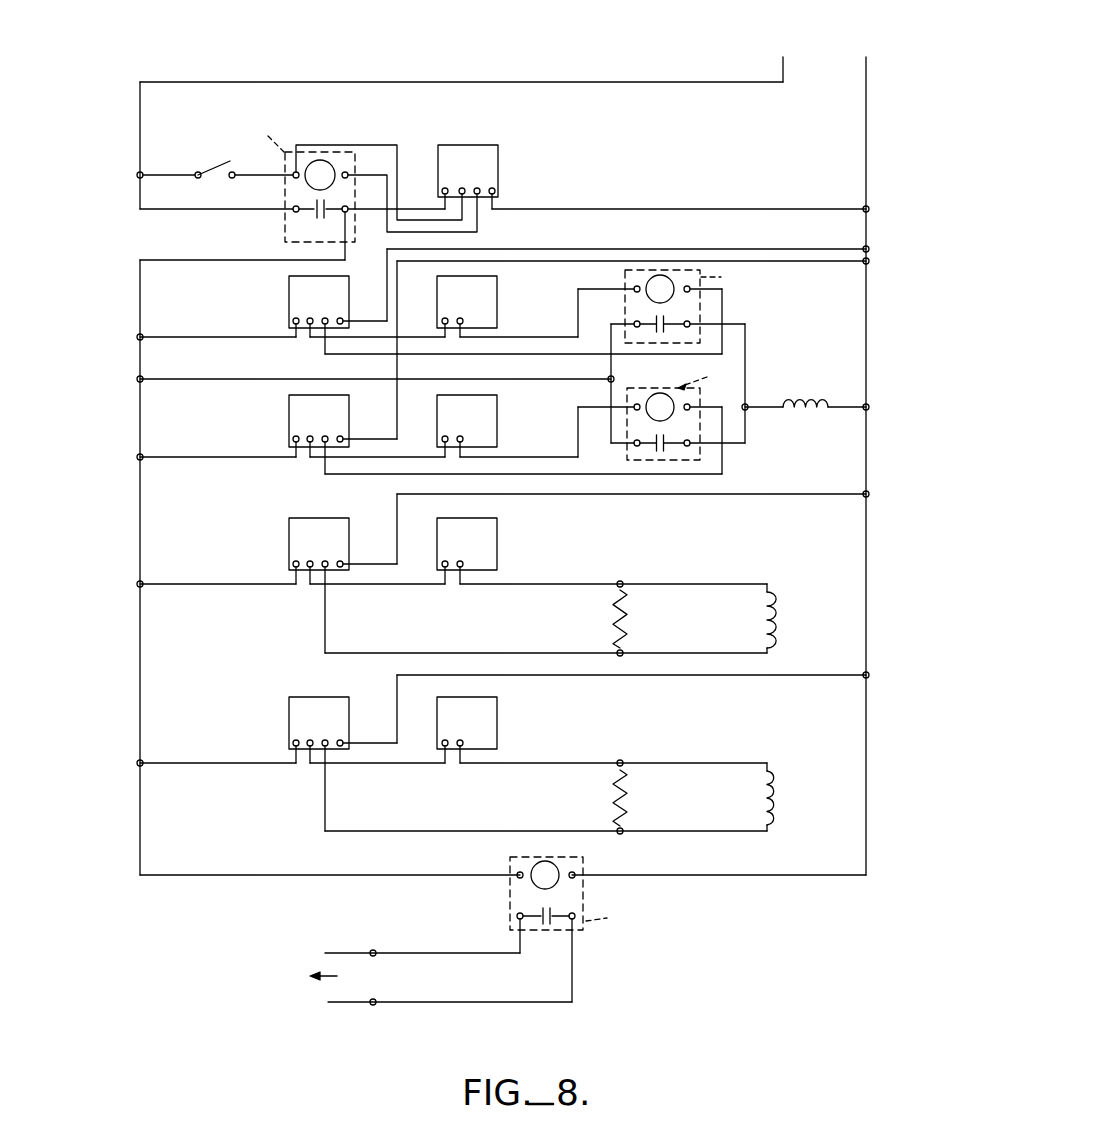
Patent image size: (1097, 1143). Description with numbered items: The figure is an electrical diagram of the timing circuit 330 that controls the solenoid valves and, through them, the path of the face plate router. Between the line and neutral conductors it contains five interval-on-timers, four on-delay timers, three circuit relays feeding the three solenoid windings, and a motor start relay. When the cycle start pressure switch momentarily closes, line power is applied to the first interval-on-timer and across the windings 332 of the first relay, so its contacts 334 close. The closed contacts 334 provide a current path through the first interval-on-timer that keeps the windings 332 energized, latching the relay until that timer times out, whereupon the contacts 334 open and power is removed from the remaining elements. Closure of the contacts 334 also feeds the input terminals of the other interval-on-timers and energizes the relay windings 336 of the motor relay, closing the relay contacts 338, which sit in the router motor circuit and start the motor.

The electrical timing circuit 330 is at (282, 40).
The windings of relay R1 332 is at (323, 160).
The contacts of relay R1 334 is at (326, 222).
The relay windings of motor relay R4 336 is at (558, 866).
The relay contacts of relay R4 338 is at (516, 909).